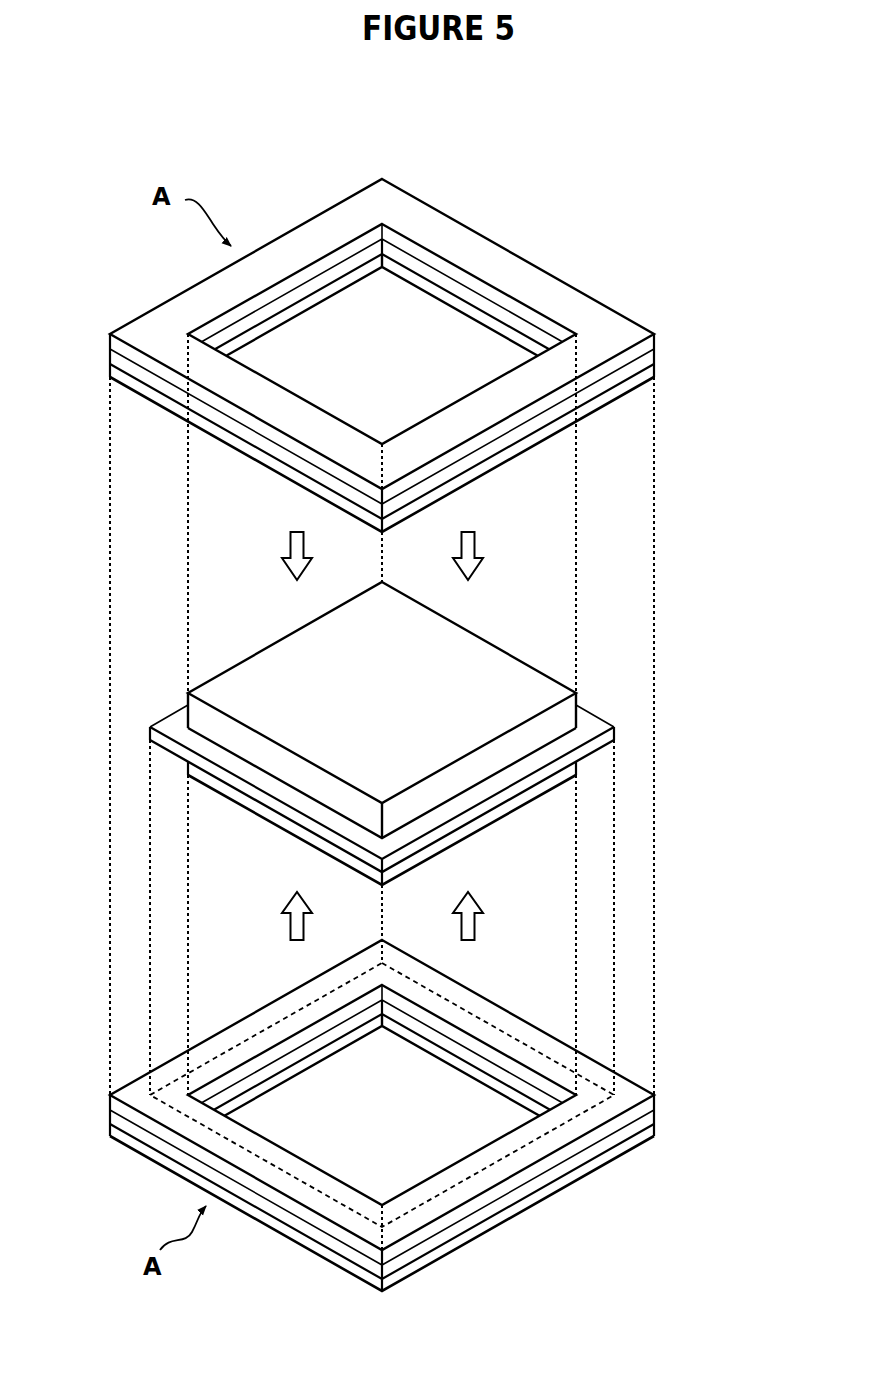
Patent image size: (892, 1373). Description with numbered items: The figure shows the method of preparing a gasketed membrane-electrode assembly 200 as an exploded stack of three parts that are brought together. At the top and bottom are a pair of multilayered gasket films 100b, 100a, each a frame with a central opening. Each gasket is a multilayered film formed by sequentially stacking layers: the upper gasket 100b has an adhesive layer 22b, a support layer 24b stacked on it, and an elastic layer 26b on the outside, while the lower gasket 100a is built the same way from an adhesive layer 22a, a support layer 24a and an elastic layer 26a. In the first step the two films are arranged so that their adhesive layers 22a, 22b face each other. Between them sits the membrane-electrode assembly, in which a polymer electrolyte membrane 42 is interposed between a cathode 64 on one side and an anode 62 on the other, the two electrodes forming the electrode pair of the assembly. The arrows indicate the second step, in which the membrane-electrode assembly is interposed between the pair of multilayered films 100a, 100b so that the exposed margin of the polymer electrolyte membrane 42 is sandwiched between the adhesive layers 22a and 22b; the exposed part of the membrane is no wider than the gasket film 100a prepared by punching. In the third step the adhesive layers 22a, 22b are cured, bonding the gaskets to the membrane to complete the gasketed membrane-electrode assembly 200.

The multilayer gasket 100b is at (420, 355).
The elastic layer 26b is at (655, 335).
The support layer 24b is at (655, 352).
The adhesive layer 22b is at (655, 368).
The membrane-electrode assembly 200 is at (480, 733).
The cathode 64 is at (578, 700).
The polymer electrolyte membrane 42 is at (615, 730).
The anode 62 is at (578, 772).
The multilayer gasket 100a is at (426, 1115).
The adhesive layer 22a is at (655, 1095).
The support layer 24a is at (655, 1110).
The elastic layer 26a is at (655, 1122).